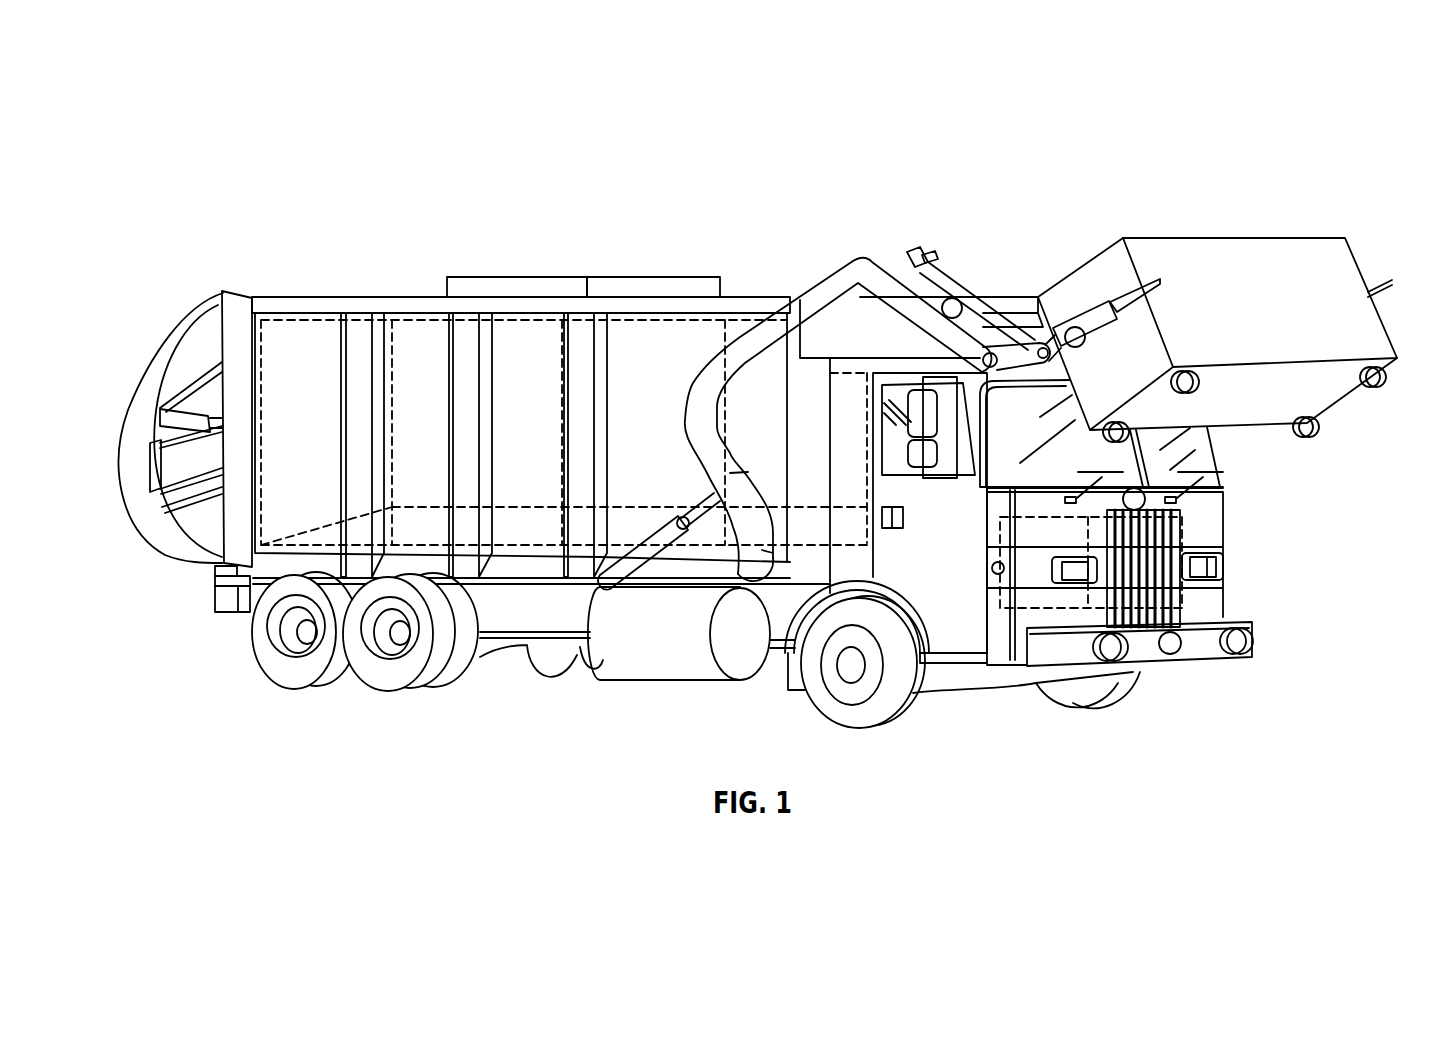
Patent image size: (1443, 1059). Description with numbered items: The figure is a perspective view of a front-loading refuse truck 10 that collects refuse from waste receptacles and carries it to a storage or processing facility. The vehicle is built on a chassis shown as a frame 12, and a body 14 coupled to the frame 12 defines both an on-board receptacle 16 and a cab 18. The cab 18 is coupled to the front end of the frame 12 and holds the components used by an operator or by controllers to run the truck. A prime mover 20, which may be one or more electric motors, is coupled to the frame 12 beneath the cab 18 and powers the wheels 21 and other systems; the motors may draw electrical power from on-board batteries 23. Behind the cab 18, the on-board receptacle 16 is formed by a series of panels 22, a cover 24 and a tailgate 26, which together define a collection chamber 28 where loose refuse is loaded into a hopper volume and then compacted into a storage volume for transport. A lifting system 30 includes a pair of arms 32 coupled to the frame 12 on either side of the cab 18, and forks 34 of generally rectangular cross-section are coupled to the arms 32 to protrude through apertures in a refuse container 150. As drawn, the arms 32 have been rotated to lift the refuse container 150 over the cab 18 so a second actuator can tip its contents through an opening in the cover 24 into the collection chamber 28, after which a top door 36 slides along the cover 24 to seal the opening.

The refuse truck 10 is at (742, 435).
The frame 12 is at (527, 640).
The body 14 is at (458, 272).
The on-board receptacle 16 is at (302, 297).
The cab 18 is at (1157, 455).
The prime mover 20 is at (1063, 593).
The wheels 21 is at (310, 668).
The panels 22 is at (270, 468).
The batteries 23 is at (1147, 590).
The cover 24 is at (647, 296).
The tailgate 26 is at (152, 382).
The collection chamber 28 is at (627, 343).
The lifting system 30 is at (818, 277).
The arms 32 is at (871, 263).
The forks 34 is at (1122, 297).
The top door 36 is at (495, 276).
The refuse container 150 is at (1240, 263).